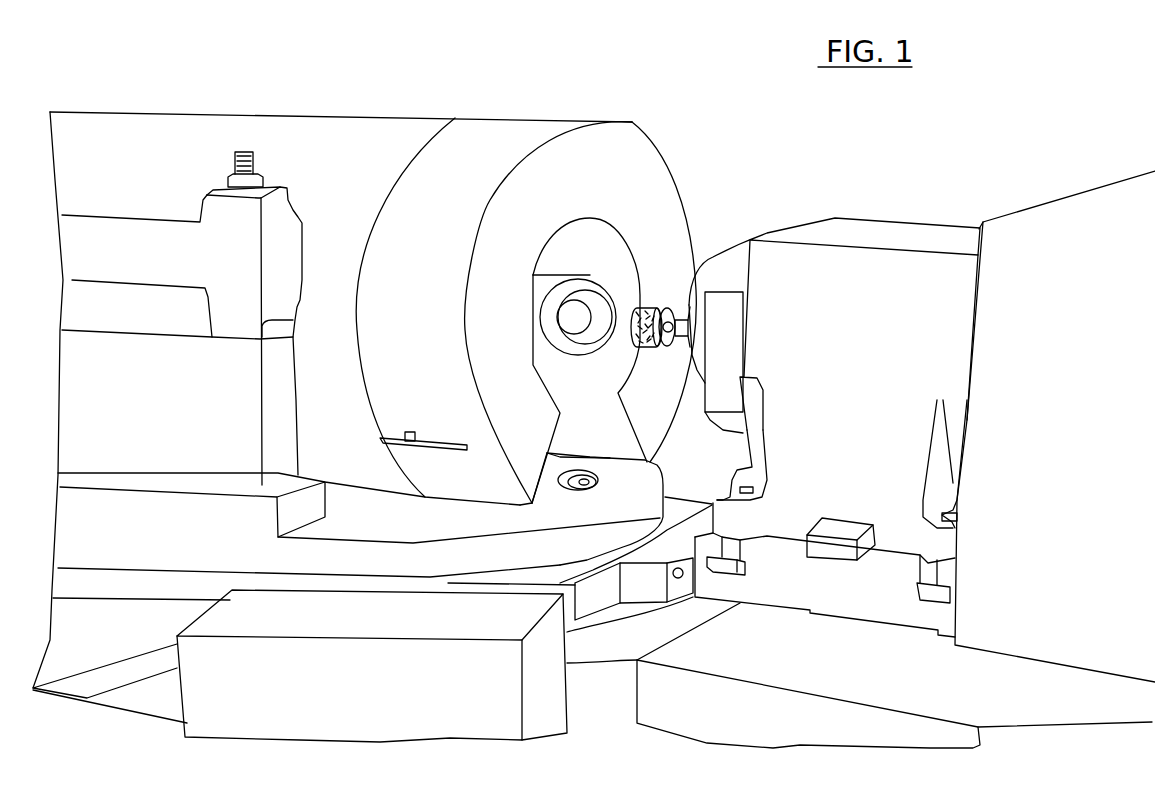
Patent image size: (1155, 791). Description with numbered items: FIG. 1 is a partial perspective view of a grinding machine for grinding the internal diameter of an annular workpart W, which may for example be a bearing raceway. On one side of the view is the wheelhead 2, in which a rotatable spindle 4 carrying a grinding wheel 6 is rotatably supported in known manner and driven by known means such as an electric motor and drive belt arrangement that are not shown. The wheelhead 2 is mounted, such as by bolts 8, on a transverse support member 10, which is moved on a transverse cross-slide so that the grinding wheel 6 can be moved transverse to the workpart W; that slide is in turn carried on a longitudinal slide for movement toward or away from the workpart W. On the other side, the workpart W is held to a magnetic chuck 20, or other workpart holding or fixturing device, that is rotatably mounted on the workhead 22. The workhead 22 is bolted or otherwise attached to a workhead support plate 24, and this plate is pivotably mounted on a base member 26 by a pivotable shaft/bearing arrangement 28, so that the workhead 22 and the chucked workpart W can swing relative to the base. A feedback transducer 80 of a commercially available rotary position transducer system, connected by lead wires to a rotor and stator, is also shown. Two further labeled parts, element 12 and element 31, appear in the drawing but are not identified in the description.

The wheelhead 2 is at (863, 213).
The rotatable spindle 4 is at (690, 262).
The grinding wheel 6 is at (650, 307).
The annular workpart W is at (597, 283).
The bolts 8 is at (755, 490).
The transverse support member 10 is at (862, 602).
The machine base 12 is at (731, 724).
The magnetic chuck 20 is at (540, 278).
The workhead 22 is at (428, 117).
The workhead support plate 24 is at (160, 545).
The base member 26 is at (593, 603).
The pivotable shaft/bearing arrangement 28 is at (622, 473).
The clamp block 31 is at (650, 597).
The feedback transducer 80 is at (332, 714).